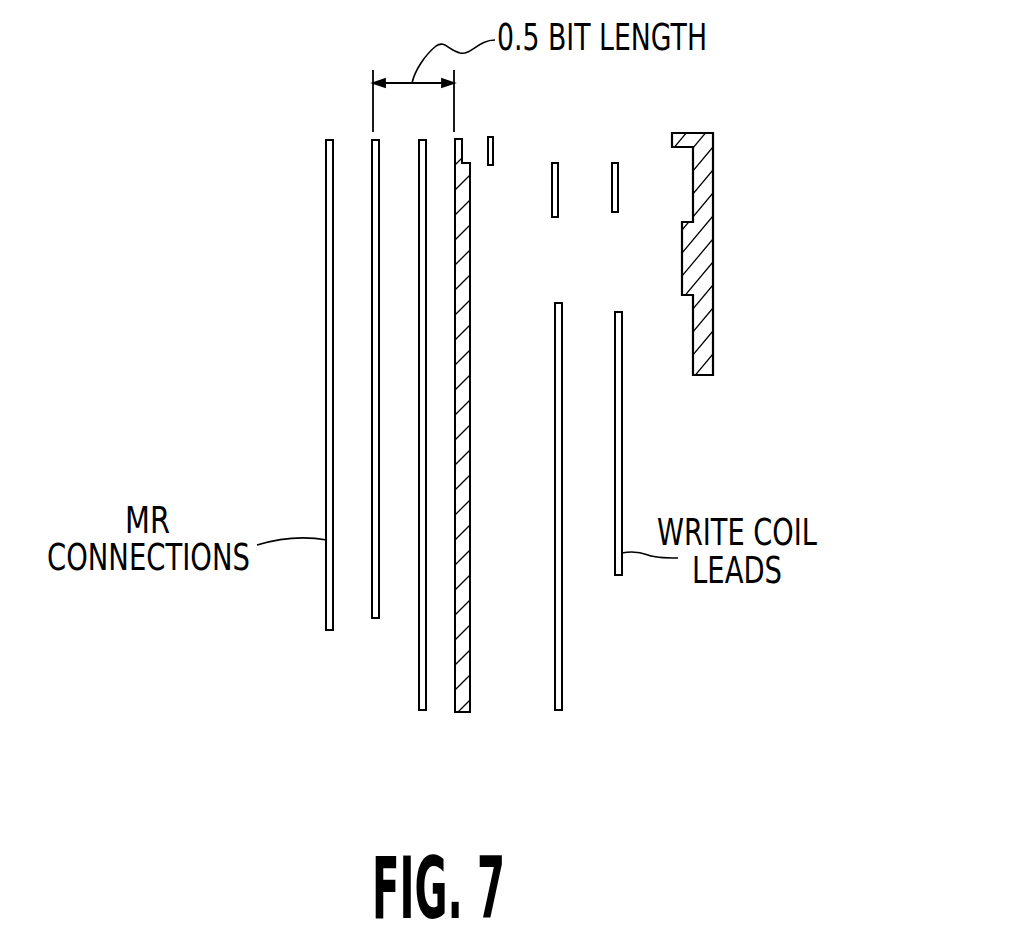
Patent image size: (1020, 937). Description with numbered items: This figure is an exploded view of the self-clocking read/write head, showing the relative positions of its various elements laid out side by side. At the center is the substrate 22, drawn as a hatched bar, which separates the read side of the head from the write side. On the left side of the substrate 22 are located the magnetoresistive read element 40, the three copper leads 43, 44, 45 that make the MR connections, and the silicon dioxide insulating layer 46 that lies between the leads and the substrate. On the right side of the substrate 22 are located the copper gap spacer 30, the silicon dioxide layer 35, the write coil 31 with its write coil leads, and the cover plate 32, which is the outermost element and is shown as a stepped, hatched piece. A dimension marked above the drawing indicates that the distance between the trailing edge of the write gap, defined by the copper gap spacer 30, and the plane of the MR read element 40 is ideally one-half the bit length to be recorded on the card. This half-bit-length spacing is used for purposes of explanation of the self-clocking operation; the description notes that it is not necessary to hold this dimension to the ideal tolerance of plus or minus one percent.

The substrate 22 is at (470, 662).
The copper gap spacer 30 is at (495, 145).
The write coil 31 is at (615, 162).
The cover plate 32 is at (706, 258).
The silicon dioxide layer 35 is at (566, 678).
The MR read element 40 is at (376, 618).
The copper lead 43 is at (240, 385).
The copper lead 44 is at (240, 385).
The copper lead 45 is at (327, 373).
The silicon dioxide insulating layer 46 is at (427, 712).